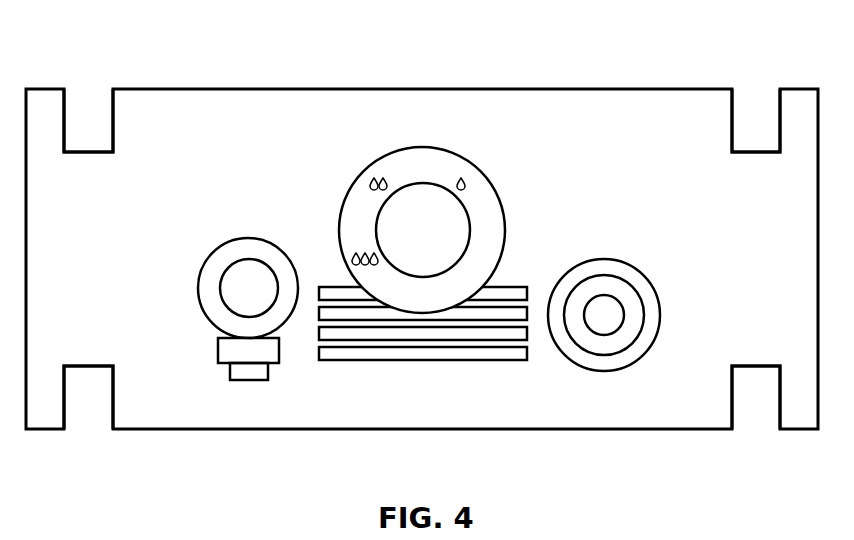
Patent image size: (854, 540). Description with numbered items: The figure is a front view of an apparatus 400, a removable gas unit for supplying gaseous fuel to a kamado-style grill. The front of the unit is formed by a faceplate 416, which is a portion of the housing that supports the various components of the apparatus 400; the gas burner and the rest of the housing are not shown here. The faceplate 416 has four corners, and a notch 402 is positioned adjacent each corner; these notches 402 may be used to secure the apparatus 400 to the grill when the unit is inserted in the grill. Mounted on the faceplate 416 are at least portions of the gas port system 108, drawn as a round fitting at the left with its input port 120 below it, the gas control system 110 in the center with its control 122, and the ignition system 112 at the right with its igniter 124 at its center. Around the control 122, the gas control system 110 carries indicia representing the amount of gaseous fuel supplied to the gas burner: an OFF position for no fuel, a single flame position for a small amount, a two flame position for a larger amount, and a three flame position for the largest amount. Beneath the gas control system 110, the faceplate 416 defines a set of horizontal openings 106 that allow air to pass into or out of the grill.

The apparatus 400 is at (510, 61).
The notch 402 is at (755, 108).
The faceplate 416 is at (648, 102).
The openings 106 is at (442, 362).
The gas port system 108 is at (242, 236).
The gas control system 110 is at (476, 227).
The ignition system 112 is at (649, 304).
The input port 120 is at (248, 383).
The control 122 is at (467, 215).
The igniter 124 is at (625, 315).